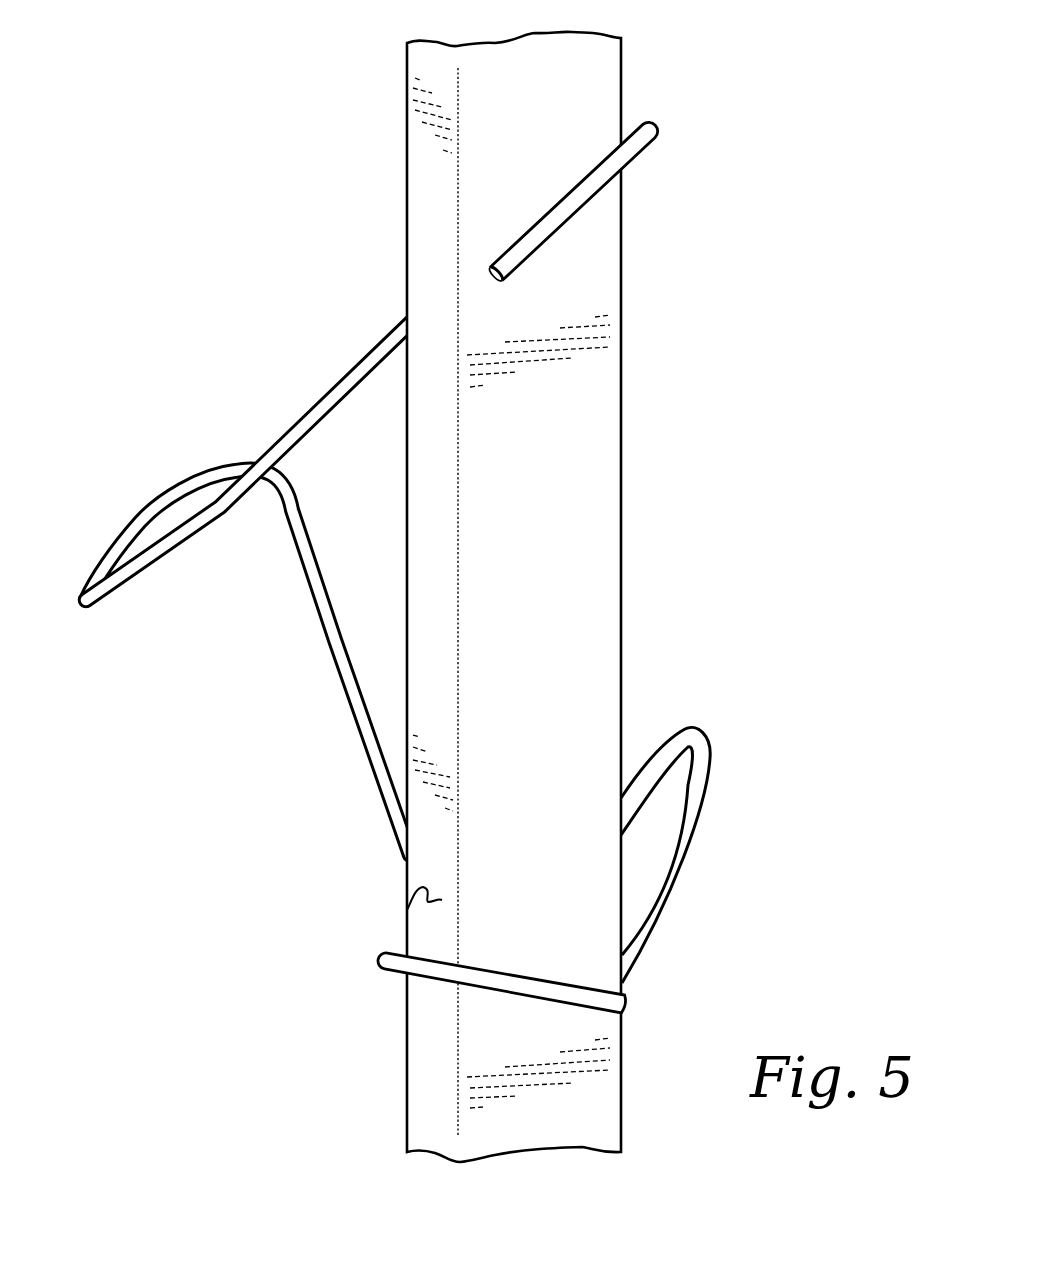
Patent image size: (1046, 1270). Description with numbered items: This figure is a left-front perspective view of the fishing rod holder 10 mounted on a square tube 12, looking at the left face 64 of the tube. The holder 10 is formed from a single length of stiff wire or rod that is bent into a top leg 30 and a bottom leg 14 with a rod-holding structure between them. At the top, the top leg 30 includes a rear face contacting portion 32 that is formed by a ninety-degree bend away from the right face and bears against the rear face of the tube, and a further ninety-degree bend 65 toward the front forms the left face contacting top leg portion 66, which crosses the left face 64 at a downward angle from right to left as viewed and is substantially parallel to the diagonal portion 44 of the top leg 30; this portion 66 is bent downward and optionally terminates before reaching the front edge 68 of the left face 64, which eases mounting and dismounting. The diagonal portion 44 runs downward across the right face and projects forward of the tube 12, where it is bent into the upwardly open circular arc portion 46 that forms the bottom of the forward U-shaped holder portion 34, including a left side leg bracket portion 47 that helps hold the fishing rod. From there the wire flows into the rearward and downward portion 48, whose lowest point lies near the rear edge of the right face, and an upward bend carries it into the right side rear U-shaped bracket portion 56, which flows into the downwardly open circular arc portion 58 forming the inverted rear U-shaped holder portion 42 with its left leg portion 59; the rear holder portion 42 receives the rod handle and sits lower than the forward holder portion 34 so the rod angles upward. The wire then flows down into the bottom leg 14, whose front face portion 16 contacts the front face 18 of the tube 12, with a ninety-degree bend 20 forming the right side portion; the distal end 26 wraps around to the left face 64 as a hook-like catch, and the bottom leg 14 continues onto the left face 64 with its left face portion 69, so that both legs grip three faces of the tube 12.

The fishing rod holder 10 is at (188, 316).
The square tube 12 is at (459, 597).
The bottom leg 14 is at (510, 984).
The front face portion 16 is at (510, 983).
The front face 18 is at (407, 910).
The 90° bend 20 is at (510, 958).
The distal end 26 is at (626, 1007).
The top leg 30 is at (608, 173).
The rear face contacting portion 32 is at (608, 173).
The forward U-shaped holder portion 34 is at (219, 589).
The rear U-shaped holder portion 42 is at (701, 816).
The diagonal portion 44 is at (219, 574).
The upwardly open circular arc portion 46 is at (219, 589).
The left side leg bracket portion 47 is at (170, 565).
The rearward and downward portion 48 is at (219, 589).
The right side rear U-shaped bracket portion 56 is at (686, 816).
The downwardly open circular arc portion 58 is at (686, 816).
The left leg portion 59 is at (676, 882).
The left face 64 is at (479, 597).
The 90° bend 65 is at (608, 216).
The left face contacting top leg portion 66 is at (553, 237).
The front edge 68 is at (479, 597).
The left face portion 69 is at (528, 1004).